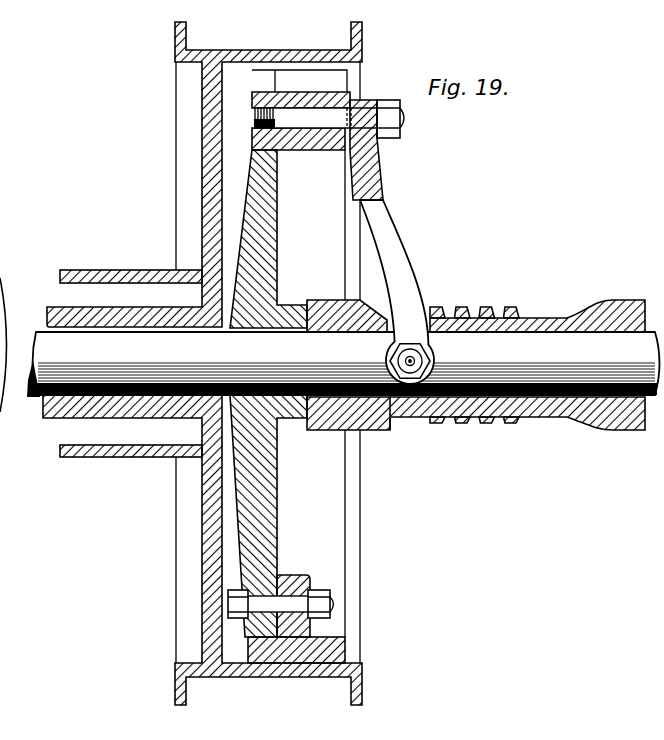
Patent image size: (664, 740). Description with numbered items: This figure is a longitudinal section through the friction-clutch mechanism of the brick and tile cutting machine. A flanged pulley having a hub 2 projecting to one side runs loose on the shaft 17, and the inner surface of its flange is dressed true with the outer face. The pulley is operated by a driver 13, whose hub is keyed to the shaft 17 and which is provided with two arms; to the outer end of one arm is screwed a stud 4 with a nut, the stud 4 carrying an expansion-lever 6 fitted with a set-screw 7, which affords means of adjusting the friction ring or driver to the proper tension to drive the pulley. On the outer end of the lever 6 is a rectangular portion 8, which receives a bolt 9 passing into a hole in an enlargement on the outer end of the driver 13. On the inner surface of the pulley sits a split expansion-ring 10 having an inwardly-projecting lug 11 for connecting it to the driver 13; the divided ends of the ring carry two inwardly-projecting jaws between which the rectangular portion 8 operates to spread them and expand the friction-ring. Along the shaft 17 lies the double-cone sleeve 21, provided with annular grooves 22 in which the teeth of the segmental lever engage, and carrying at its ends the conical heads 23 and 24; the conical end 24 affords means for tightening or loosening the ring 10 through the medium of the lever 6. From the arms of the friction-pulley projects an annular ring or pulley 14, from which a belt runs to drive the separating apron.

The hub 2 is at (110, 440).
The stud 4 is at (442, 137).
The expansion-lever 6 is at (404, 253).
The set-screw 7 is at (472, 358).
The rectangular portion 8 is at (302, 137).
The bolt 9 is at (400, 597).
The split expansion-ring 10 is at (405, 659).
The inwardly-projecting lug 11 is at (312, 565).
The driver 13 is at (265, 199).
The annular ring or pulley 14 is at (90, 271).
The shaft 17 is at (343, 364).
The double-cone sleeve 21 is at (533, 317).
The annular grooves 22 is at (463, 306).
The conical head 23 is at (598, 303).
The conical head 24 is at (348, 352).